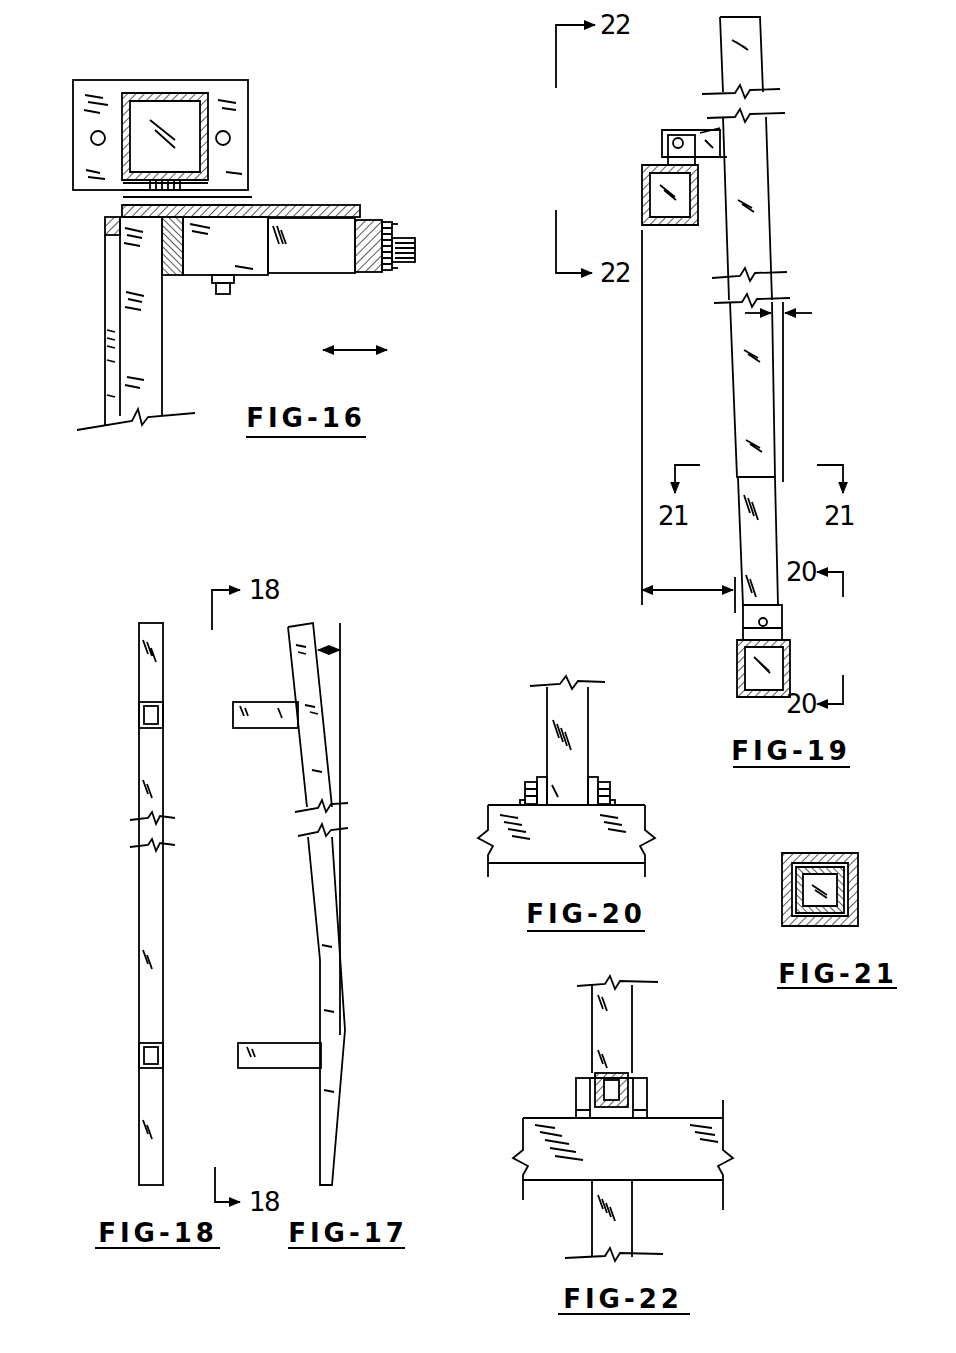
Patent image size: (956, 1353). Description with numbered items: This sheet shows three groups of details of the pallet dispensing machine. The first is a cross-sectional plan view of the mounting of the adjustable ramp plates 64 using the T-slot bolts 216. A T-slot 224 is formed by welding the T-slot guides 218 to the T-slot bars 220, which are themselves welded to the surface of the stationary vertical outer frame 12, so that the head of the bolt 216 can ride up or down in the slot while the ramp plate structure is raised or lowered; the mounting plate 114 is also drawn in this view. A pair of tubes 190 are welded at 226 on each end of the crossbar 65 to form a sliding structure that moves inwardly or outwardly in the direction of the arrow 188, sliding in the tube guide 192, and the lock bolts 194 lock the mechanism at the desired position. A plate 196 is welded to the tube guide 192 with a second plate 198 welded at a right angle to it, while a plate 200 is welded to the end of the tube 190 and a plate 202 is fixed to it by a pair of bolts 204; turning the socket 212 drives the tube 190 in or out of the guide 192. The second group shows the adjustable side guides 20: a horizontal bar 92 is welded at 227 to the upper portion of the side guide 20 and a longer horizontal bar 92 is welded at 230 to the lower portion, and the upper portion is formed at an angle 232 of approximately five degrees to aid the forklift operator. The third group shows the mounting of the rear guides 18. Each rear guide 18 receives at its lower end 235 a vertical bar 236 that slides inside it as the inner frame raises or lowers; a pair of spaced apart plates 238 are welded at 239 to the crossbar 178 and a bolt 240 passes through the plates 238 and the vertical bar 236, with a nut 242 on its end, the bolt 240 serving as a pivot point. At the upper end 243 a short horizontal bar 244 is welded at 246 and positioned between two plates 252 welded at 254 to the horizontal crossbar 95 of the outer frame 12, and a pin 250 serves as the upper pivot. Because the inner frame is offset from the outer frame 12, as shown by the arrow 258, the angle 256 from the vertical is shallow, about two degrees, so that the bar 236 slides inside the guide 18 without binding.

In FIG. 16, the stationary vertical outer frame 12 is at (150, 93).
In FIG. 16, the mounting plate 114 is at (216, 92).
In FIG. 16, the T-slot bolt 216 is at (120, 178).
In FIG. 16, the T-slot bar 220 is at (178, 180).
In FIG. 16, the T-slot guide 218 is at (200, 186).
In FIG. 16, the plate 196 is at (212, 198).
In FIG. 16, the second plate 198 is at (350, 208).
In FIG. 16, the T-slot 224 is at (118, 219).
In FIG. 16, the ramp plate 64 is at (110, 331).
In FIG. 16, the crossbar 65 is at (151, 365).
In FIG. 16, the weld 226 is at (170, 280).
In FIG. 16, the tube guide 192 is at (231, 260).
In FIG. 16, the tube 190 is at (304, 258).
In FIG. 16, the lock bolt 194 is at (224, 295).
In FIG. 16, the plate 200 is at (362, 220).
In FIG. 16, the plate 202 is at (385, 222).
In FIG. 16, the bolt 204 is at (388, 225).
In FIG. 16, the socket 212 is at (415, 248).
In FIG. 16, the arrow 188 is at (358, 348).
In FIG. 17, the side guide 20 is at (305, 712).
In FIG. 18, the side guide 20 is at (139, 673).
In FIG. 17, the angle 232 is at (333, 650).
In FIG. 17, the horizontal bar 92 is at (233, 715).
In FIG. 18, the horizontal bar 92 is at (139, 715).
In FIG. 17, the weld 227 is at (299, 728).
In FIG. 18, the weld 227 is at (150, 728).
In FIG. 17, the weld 230 is at (320, 1068).
In FIG. 18, the weld 230 is at (150, 1068).
In FIG. 19, the rear guide 18 is at (735, 190).
In FIG. 21, the rear guide 18 is at (797, 856).
In FIG. 22, the rear guide 18 is at (600, 1036).
In FIG. 19, the weld 246 is at (722, 112).
In FIG. 22, the weld 246 is at (628, 1077).
In FIG. 19, the short horizontal bar 244 is at (680, 130).
In FIG. 22, the short horizontal bar 244 is at (620, 1082).
In FIG. 19, the pin 250 is at (668, 141).
In FIG. 22, the pin 250 is at (595, 1078).
In FIG. 19, the plate 252 is at (668, 160).
In FIG. 22, the plate 252 is at (578, 1089).
In FIG. 19, the weld 254 is at (765, 158).
In FIG. 22, the weld 254 is at (578, 1115).
In FIG. 19, the horizontal crossbar 95 is at (642, 191).
In FIG. 22, the horizontal crossbar 95 is at (637, 1165).
In FIG. 19, the upper end of rear guide 243 is at (730, 142).
In FIG. 19, the angle 256 is at (790, 318).
In FIG. 19, the lower end of rear guide 235 is at (775, 482).
In FIG. 19, the vertical bar 236 is at (753, 547).
In FIG. 20, the vertical bar 236 is at (547, 701).
In FIG. 21, the vertical bar 236 is at (826, 872).
In FIG. 19, the arrow 258 is at (713, 593).
In FIG. 19, the spaced apart plates 238 is at (746, 620).
In FIG. 20, the spaced apart plates 238 is at (540, 777).
In FIG. 19, the bolt 240 is at (768, 622).
In FIG. 20, the bolt 240 is at (530, 782).
In FIG. 19, the weld 239 is at (786, 630).
In FIG. 20, the weld 239 is at (520, 803).
In FIG. 20, the nut 242 is at (608, 784).
In FIG. 19, the crossbar 178 is at (737, 662).
In FIG. 20, the crossbar 178 is at (584, 849).